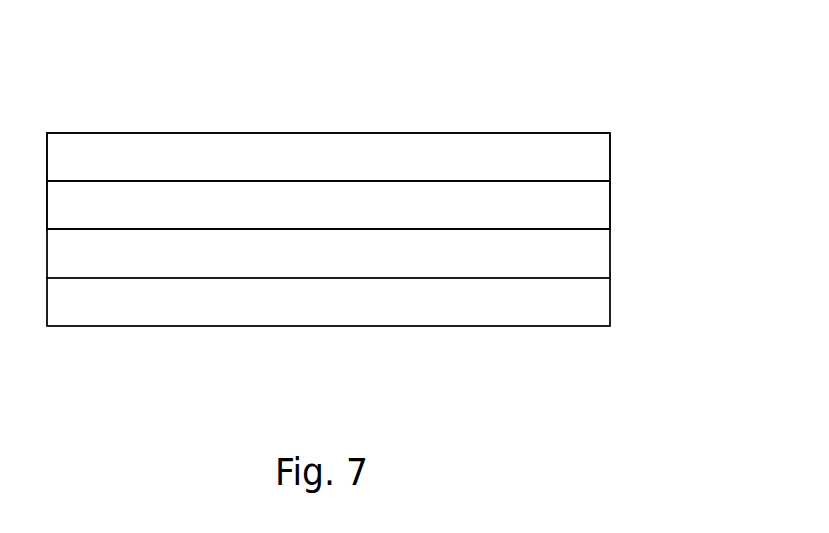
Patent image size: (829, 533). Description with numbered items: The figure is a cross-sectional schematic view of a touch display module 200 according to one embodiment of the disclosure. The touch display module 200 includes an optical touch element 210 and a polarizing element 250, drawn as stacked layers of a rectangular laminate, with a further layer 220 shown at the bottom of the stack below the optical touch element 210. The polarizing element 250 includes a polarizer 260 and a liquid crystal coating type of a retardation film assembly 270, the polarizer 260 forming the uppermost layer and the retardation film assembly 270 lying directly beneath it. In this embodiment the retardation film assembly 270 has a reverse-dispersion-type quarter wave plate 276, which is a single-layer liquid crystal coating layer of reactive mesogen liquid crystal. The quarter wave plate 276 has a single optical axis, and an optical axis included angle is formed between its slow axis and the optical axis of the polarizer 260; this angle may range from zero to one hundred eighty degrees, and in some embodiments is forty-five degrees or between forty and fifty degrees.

The touch display module 200 is at (53, 36).
The polarizing element 250 is at (740, 130).
The polarizer 260 is at (597, 151).
The retardation film assembly 270 is at (672, 173).
The quarter wave plate 276 is at (597, 200).
The optical touch element 210 is at (597, 252).
The backing layer 220 is at (597, 304).